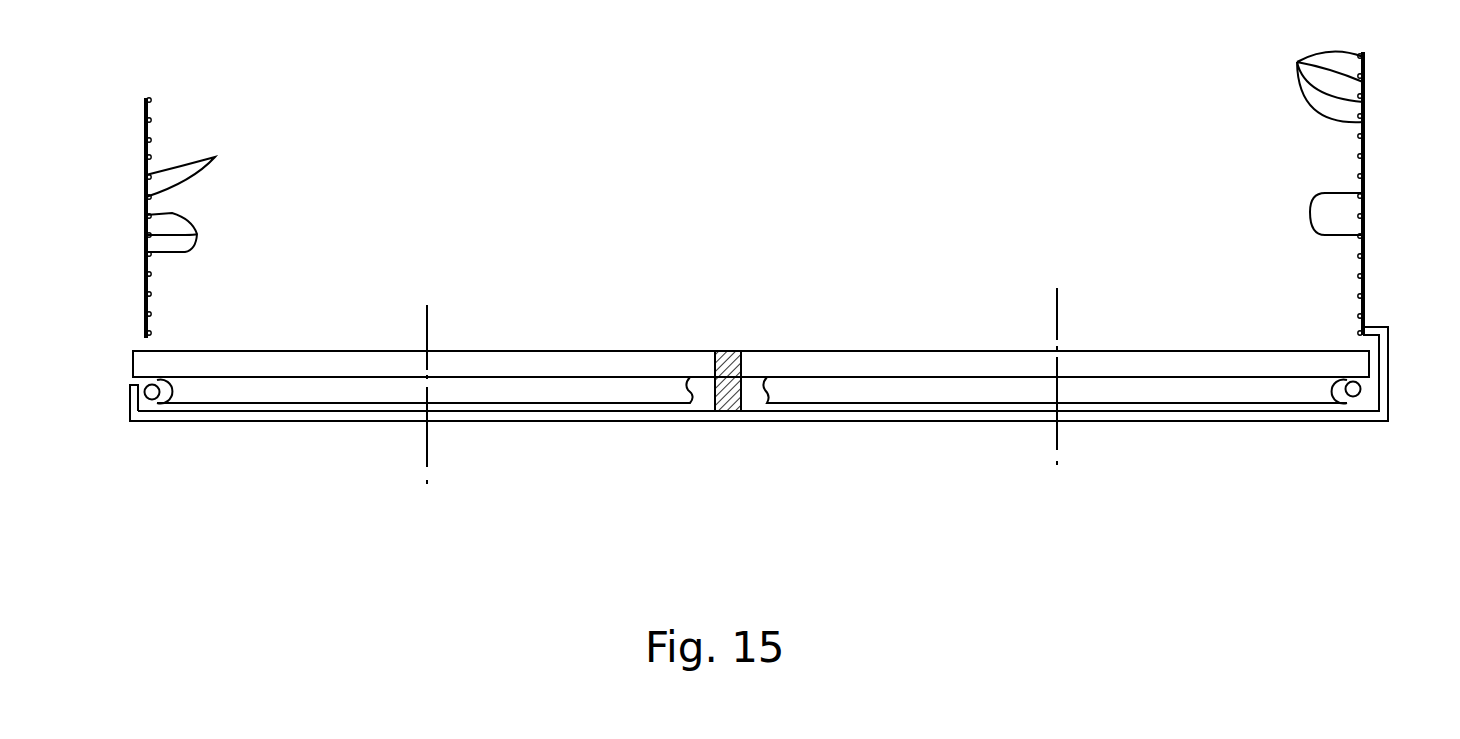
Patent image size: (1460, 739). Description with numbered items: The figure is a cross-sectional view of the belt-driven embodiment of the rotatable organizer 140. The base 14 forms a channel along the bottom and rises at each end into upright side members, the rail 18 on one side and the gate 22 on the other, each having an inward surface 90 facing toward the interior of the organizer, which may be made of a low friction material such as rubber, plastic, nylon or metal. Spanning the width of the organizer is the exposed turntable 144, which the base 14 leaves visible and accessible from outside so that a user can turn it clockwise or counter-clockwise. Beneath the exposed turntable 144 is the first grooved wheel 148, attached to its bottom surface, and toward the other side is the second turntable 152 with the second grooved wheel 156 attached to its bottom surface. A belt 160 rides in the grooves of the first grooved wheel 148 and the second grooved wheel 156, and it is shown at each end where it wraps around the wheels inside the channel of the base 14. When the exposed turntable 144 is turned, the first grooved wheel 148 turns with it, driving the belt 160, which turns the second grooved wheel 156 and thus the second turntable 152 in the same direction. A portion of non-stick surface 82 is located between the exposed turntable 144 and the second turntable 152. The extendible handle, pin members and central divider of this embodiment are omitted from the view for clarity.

The rotatable organizer 140 is at (738, 146).
The gate 22 is at (146, 135).
The rail 18 is at (1363, 72).
The inward surface 90 is at (754, 152).
The exposed turntable 144 is at (300, 358).
The first grooved wheel 148 is at (313, 391).
The second turntable 152 is at (1117, 358).
The second grooved wheel 156 is at (1200, 388).
The non-stick surface 82 is at (725, 351).
The base 14 is at (127, 398).
The belt 160 is at (152, 392).